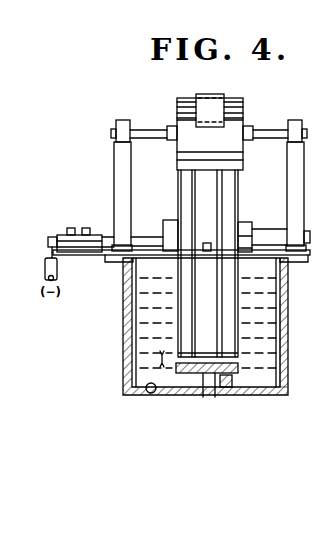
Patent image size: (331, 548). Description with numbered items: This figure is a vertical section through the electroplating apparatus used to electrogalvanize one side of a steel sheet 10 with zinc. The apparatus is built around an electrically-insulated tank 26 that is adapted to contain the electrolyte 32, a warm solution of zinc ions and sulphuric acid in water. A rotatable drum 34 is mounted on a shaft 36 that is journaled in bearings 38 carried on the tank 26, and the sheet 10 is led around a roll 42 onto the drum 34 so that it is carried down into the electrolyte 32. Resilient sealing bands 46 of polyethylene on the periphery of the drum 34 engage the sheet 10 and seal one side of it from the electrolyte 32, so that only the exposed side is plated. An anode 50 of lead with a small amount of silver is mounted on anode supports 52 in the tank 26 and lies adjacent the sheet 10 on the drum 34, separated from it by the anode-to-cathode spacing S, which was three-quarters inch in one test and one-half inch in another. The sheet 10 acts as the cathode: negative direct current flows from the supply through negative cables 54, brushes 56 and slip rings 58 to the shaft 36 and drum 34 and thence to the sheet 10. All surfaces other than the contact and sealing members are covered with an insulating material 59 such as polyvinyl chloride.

The sheet 10 is at (208, 96).
The roll 42 is at (243, 113).
The bearings 38 is at (124, 210).
The shaft 36 is at (248, 226).
The slip rings 58 is at (68, 232).
The brushes 56 is at (86, 228).
The negative cables 54 is at (58, 270).
The tank 26 is at (124, 336).
The electrolyte 32 is at (286, 379).
The insulating material 59 is at (149, 393).
The drum 34 is at (235, 297).
The sealing bands 46 is at (192, 299).
The anode 50 is at (232, 366).
The anode supports 52 is at (228, 387).
The spacing S is at (165, 360).